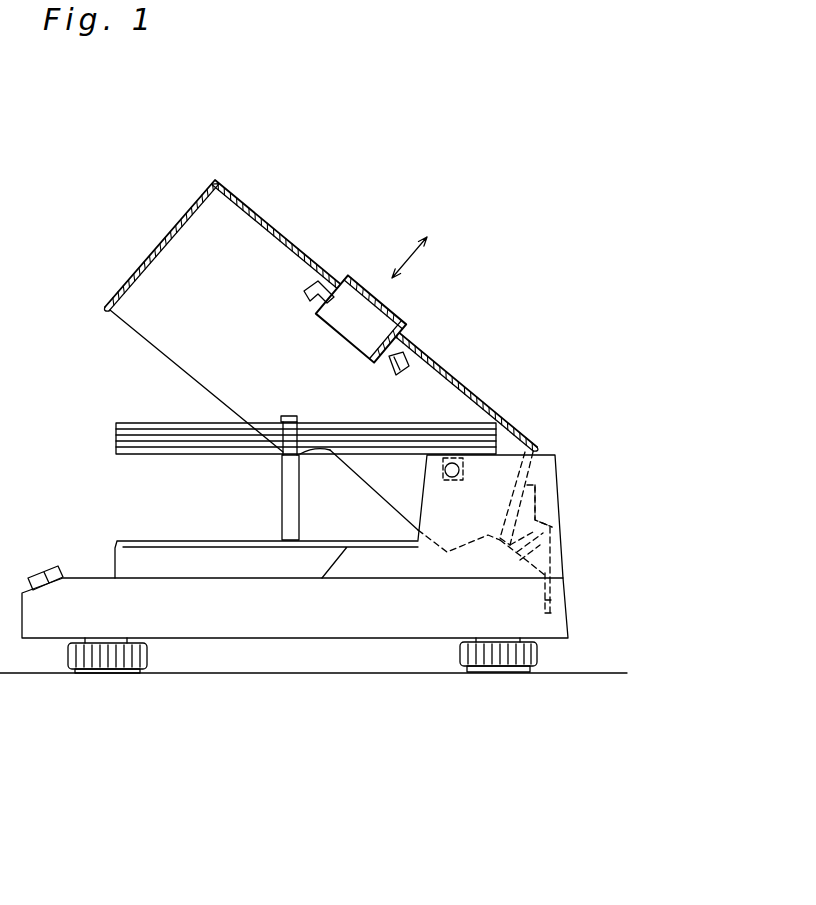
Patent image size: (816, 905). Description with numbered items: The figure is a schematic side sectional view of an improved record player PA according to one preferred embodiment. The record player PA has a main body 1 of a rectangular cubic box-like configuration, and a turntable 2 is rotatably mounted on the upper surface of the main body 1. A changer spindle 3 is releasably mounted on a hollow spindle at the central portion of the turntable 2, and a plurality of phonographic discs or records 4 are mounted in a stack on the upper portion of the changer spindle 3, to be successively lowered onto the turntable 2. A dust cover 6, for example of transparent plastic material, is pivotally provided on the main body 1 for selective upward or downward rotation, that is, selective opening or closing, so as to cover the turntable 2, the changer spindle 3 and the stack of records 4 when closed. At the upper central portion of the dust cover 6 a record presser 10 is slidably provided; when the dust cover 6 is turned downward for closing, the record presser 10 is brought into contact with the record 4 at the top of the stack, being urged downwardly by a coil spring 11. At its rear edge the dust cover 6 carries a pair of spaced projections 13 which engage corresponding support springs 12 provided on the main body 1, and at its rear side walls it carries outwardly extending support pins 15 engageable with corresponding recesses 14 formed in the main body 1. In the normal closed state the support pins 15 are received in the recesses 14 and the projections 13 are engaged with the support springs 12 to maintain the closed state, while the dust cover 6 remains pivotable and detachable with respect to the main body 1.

The main body 1 is at (373, 618).
The turntable 2 is at (117, 548).
The changer spindle 3 is at (290, 498).
The phonographic discs or records 4 is at (140, 430).
The dust cover 6 is at (470, 387).
The record presser 10 is at (393, 308).
The coil spring 11 is at (427, 350).
The support springs 12 is at (543, 567).
The spaced projections 13 is at (543, 527).
The recesses 14 is at (463, 473).
The support pins 15 is at (458, 465).
The record player PA is at (499, 266).